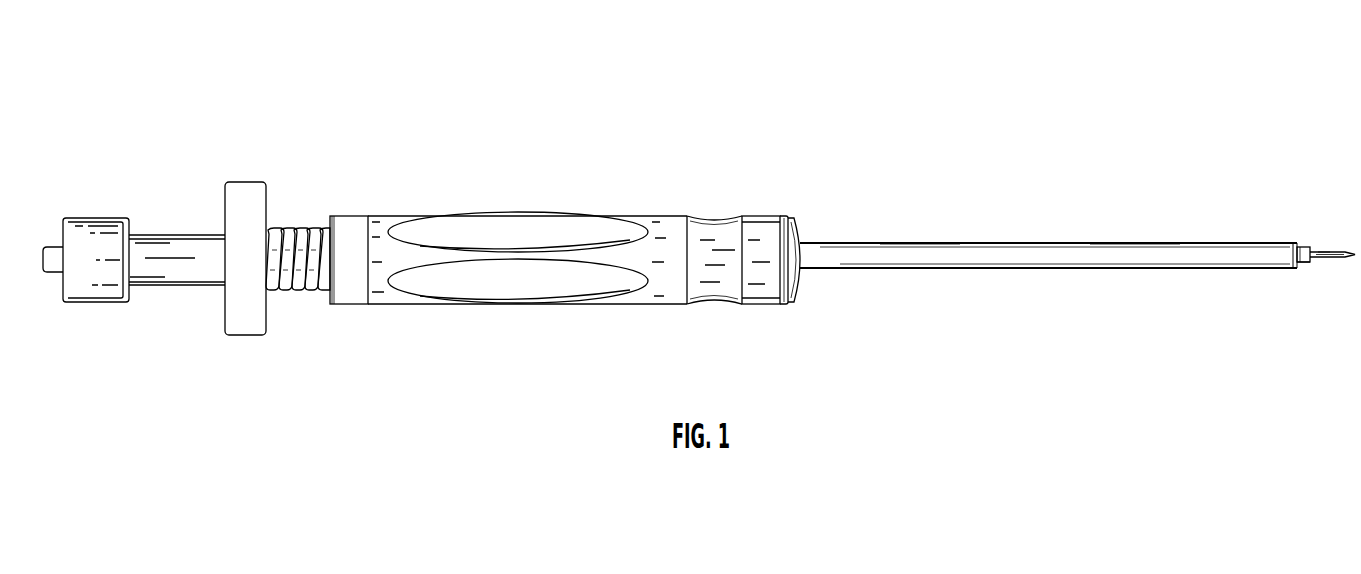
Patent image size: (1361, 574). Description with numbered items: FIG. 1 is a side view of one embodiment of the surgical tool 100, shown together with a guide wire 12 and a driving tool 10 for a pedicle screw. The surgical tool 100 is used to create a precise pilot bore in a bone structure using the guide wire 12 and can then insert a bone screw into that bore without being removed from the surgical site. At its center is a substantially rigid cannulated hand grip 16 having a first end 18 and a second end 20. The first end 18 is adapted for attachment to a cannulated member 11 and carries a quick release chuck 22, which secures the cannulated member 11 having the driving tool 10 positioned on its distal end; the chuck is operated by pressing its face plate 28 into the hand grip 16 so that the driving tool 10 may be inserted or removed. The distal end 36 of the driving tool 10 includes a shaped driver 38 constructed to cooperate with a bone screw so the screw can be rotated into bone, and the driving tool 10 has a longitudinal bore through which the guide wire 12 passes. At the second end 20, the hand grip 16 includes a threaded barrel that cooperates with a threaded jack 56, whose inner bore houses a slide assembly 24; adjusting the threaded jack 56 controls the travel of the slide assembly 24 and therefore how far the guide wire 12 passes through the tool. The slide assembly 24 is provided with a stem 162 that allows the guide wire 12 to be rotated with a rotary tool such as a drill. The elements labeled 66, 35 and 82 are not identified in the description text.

The surgical tool 100 is at (444, 70).
The stem 162 is at (53, 268).
The slide assembly 24 is at (113, 223).
The plunger shaft 66 is at (172, 272).
The threaded jack 56 is at (240, 193).
The second end 20 is at (352, 232).
The cannulated hand grip 16 is at (587, 213).
The first end 18 is at (753, 215).
The face plate 28 is at (793, 222).
The quick release chuck 22 is at (790, 303).
The driving tool 10 is at (998, 247).
The cannula proximal portion 35 is at (925, 242).
The cannulated member 11 is at (1132, 250).
The distal end 36 is at (1300, 248).
The shaped driver 38 is at (1300, 264).
The guide wire 12 is at (1328, 260).
The needle tip upper portion 82 is at (1325, 252).